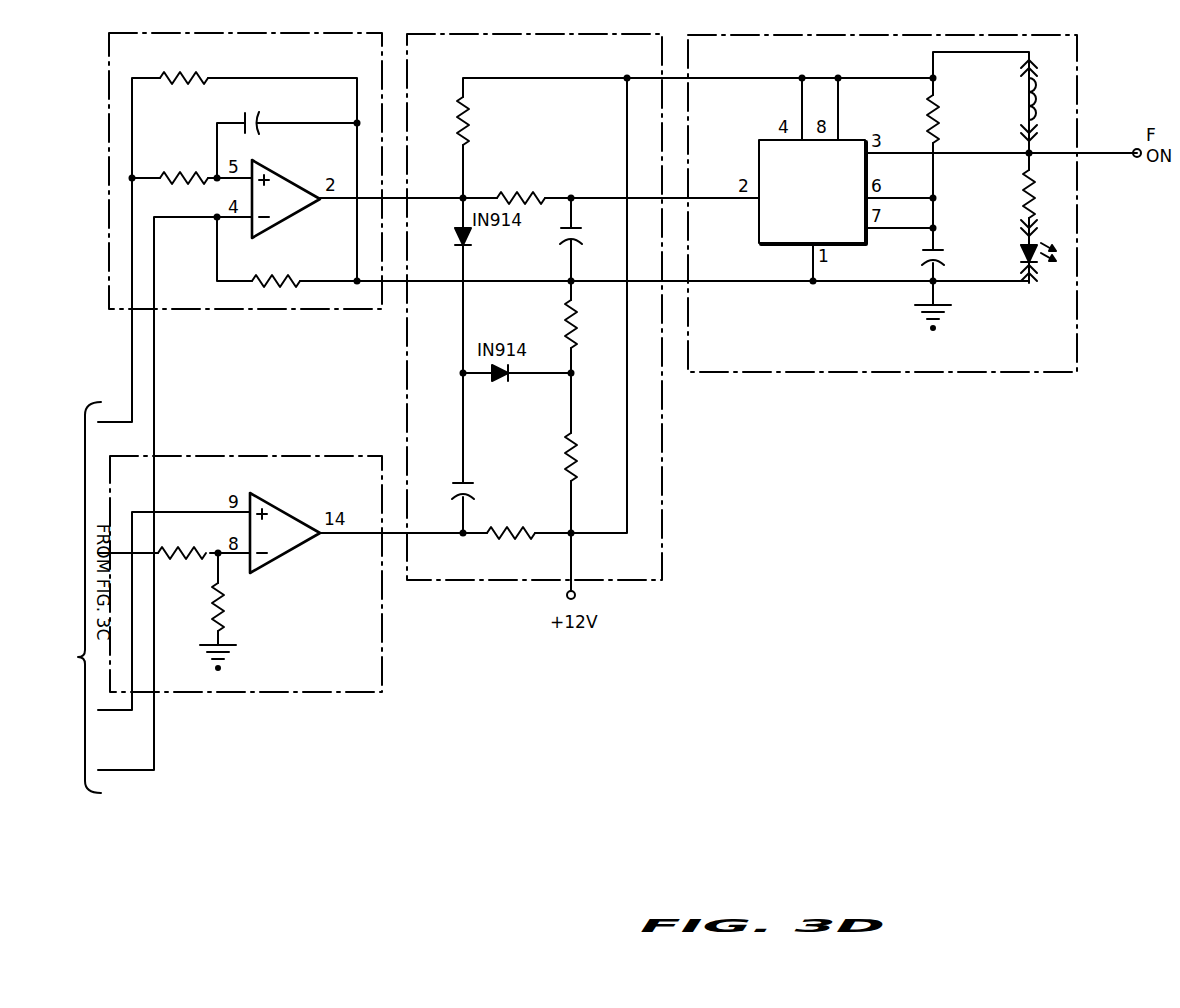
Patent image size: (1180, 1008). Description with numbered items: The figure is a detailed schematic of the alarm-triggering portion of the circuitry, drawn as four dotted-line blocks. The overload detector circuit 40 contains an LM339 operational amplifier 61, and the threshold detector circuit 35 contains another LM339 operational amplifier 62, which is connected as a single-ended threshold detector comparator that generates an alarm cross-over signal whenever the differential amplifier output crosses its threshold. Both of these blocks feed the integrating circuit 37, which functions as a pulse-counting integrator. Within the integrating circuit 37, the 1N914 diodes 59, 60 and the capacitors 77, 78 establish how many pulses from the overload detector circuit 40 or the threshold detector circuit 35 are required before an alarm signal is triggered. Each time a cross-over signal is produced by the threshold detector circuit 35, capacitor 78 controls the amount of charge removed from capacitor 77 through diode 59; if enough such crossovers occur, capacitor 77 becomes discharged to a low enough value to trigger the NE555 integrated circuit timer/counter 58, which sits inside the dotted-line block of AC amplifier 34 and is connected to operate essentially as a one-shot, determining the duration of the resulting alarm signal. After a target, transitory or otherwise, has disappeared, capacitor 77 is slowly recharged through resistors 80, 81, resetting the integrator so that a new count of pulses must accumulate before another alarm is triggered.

The overload detector circuit 40 is at (304, 42).
The threshold detector circuit 35 is at (307, 465).
The integrating circuit 37 is at (584, 40).
The AC amplifier 34 is at (842, 42).
The LM339 operational amplifier 61 is at (279, 176).
The LM339 operational amplifier 62 is at (290, 552).
The resistor 80 is at (467, 126).
The resistor 81 is at (502, 194).
The 1N914 diode 59 is at (469, 244).
The 1N914 diode 60 is at (498, 381).
The capacitor 77 is at (576, 236).
The capacitor 78 is at (471, 484).
The NE555 integrated circuit timer/counter 58 is at (768, 246).